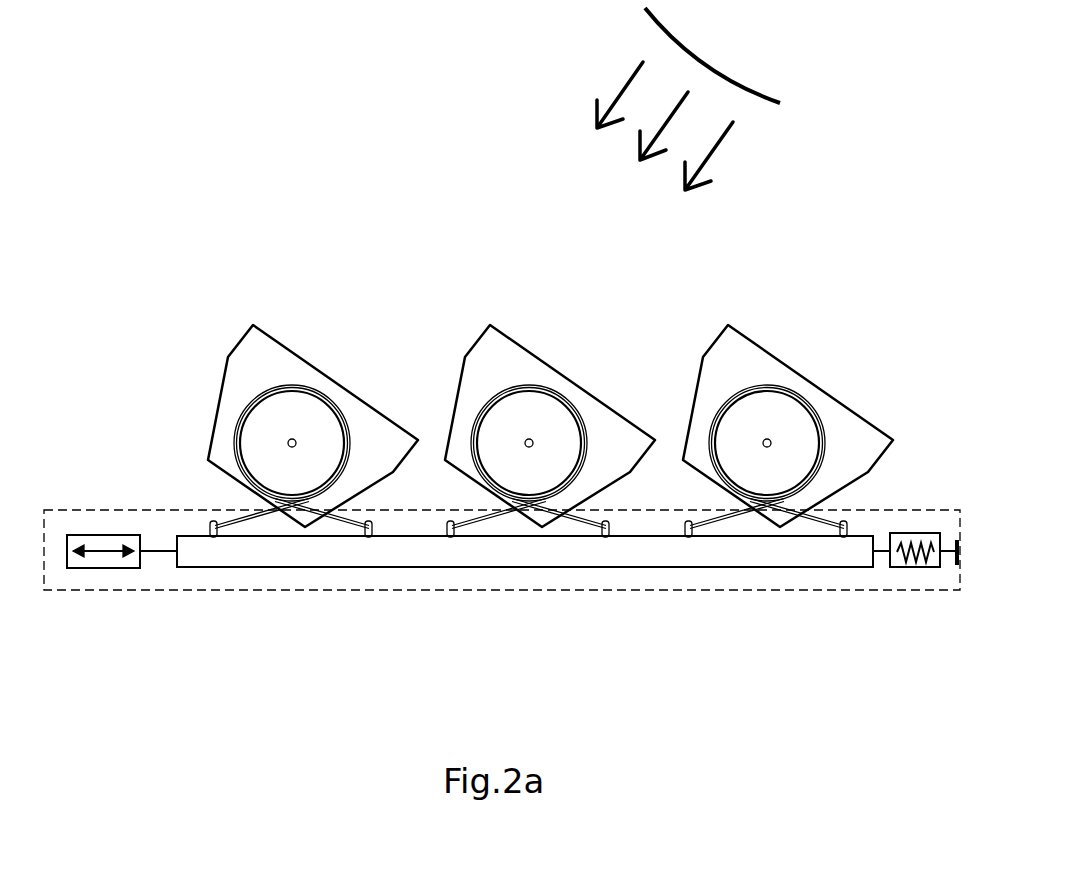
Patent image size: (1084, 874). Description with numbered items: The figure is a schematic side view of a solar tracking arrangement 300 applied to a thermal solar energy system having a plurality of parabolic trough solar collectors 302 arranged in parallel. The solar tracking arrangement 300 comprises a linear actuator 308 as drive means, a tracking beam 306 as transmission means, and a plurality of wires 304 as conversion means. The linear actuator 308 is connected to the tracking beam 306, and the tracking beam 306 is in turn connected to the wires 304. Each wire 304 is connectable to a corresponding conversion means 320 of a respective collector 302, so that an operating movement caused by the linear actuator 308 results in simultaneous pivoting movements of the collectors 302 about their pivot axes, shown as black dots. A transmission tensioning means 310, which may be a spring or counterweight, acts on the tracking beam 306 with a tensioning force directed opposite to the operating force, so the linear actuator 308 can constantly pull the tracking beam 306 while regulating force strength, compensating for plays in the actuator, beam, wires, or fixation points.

The solar tracking arrangement 300 is at (293, 668).
The parabolic trough solar collector 302 is at (252, 342).
The wire 304 is at (334, 403).
The tracking beam 306 is at (645, 556).
The linear actuator 308 is at (102, 561).
The transmission tensioning means 310 is at (913, 568).
The conversion means 320 is at (305, 390).